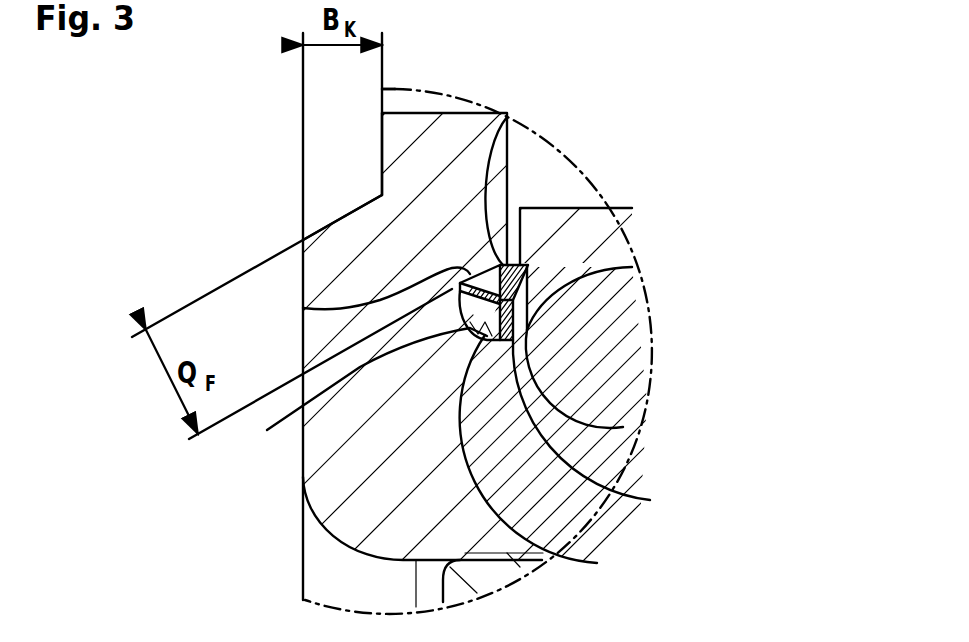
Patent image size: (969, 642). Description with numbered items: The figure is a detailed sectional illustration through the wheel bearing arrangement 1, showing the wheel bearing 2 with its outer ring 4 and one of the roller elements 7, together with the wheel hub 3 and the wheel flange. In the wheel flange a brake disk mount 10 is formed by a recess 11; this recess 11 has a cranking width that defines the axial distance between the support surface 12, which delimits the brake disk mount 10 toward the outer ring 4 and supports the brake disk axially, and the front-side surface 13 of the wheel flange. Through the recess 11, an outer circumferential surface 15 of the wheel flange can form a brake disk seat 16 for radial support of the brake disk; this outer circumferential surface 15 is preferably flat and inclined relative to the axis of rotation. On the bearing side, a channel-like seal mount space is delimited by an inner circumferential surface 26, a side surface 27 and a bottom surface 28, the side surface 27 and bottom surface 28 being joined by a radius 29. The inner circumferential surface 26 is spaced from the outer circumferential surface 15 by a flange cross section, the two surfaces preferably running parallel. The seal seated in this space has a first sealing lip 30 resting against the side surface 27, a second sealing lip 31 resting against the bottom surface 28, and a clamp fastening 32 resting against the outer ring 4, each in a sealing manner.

The wheel bearing arrangement 1 is at (662, 108).
The wheel bearing 2 is at (662, 168).
The wheel hub 3 is at (540, 91).
The outer ring 4 is at (582, 234).
The roller elements 7 is at (613, 348).
The brake disk mount 10 is at (328, 99).
The recess 11 is at (322, 212).
The support surface 12 is at (380, 143).
The front-side surface 13 is at (296, 348).
The outer circumferential surface 15 is at (330, 185).
The brake disk seat 16 is at (290, 225).
The inner circumferential surface 26 is at (498, 178).
The side surface 27 is at (338, 378).
The bottom surface 28 is at (640, 497).
The radius 29 is at (550, 547).
The first sealing lip 30 is at (303, 308).
The second sealing lip 31 is at (623, 427).
The clamp fastening 32 is at (580, 300).